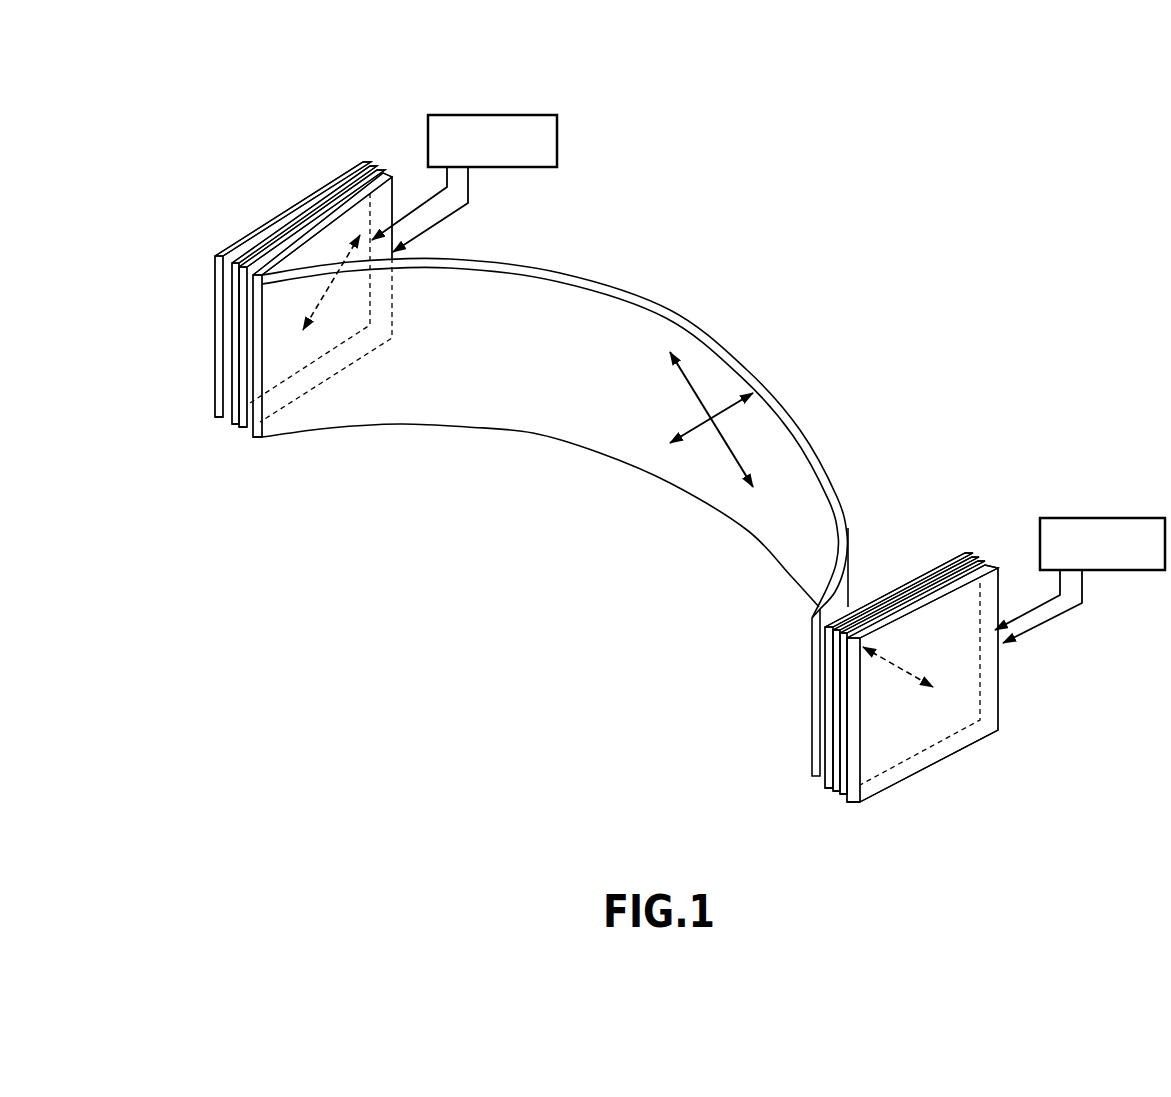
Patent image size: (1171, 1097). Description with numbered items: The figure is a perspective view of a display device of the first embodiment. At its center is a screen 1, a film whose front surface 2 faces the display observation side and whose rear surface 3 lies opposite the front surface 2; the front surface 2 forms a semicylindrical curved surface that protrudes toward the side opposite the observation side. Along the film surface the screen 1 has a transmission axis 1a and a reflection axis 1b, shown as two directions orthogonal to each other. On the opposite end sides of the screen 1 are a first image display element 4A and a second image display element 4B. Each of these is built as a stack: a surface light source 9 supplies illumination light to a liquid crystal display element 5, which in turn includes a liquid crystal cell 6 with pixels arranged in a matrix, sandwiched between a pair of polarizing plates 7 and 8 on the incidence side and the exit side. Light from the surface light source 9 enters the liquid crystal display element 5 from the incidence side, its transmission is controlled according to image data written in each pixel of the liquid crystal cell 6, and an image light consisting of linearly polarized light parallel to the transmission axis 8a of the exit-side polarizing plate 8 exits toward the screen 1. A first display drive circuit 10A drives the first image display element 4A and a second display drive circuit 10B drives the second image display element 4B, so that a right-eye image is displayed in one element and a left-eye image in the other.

The screen 1 is at (555, 503).
The transmission axis 1a is at (692, 430).
The reflection axis 1b is at (737, 452).
The front surface 2 is at (577, 422).
The rear surface 3 is at (668, 308).
The first image display element 4A is at (380, 157).
The second image display element 4B is at (978, 545).
The liquid crystal display element 5 is at (227, 430).
The liquid crystal cell 6 is at (323, 217).
The incidence-side polarizing plate 7 is at (303, 212).
The exit-side polarizing plate 8 is at (340, 213).
The transmission axis of the exit-side polarizing plate 8a is at (317, 310).
The surface light source 9 is at (215, 327).
The first display drive circuit 10A is at (490, 115).
The second display drive circuit 10B is at (1092, 518).